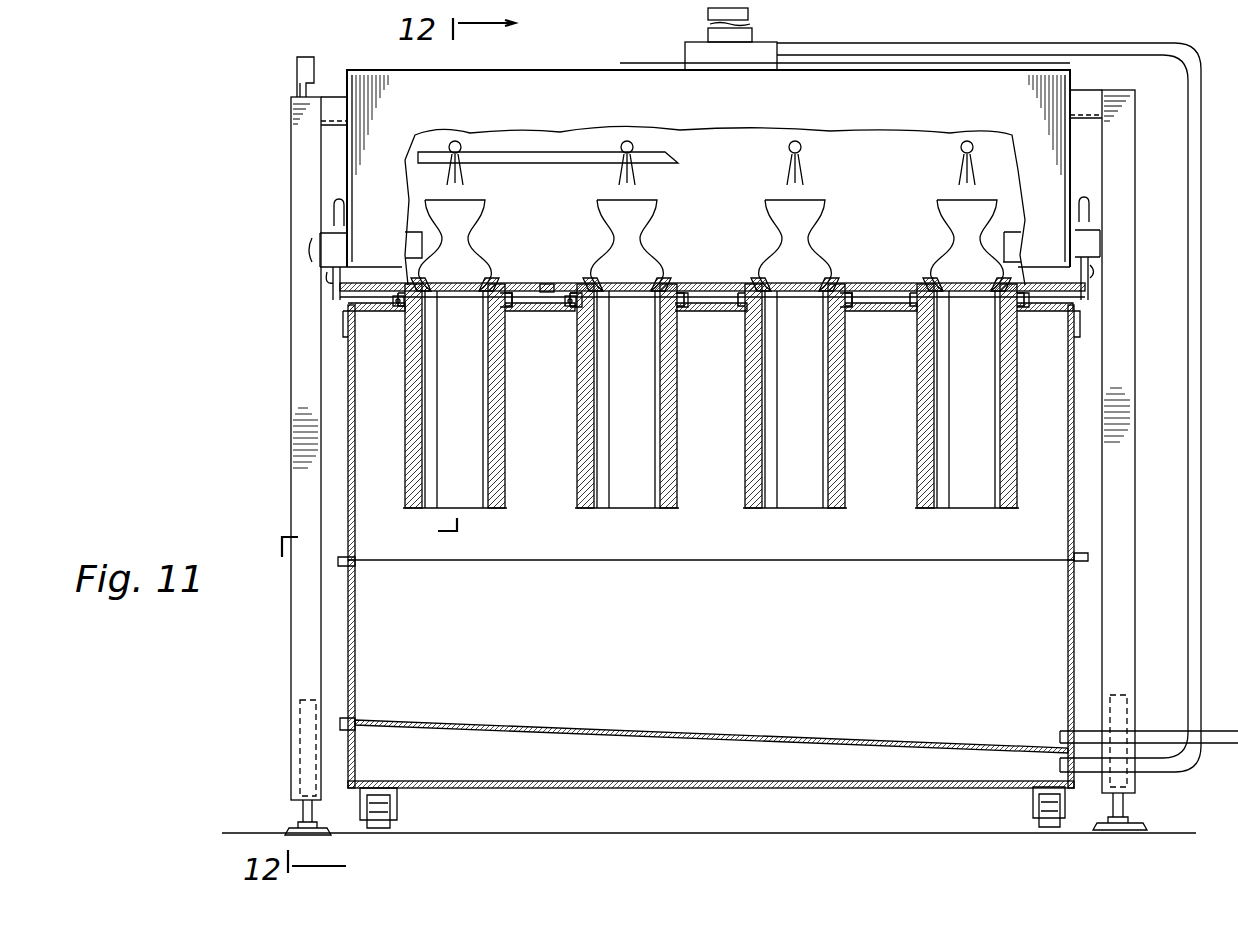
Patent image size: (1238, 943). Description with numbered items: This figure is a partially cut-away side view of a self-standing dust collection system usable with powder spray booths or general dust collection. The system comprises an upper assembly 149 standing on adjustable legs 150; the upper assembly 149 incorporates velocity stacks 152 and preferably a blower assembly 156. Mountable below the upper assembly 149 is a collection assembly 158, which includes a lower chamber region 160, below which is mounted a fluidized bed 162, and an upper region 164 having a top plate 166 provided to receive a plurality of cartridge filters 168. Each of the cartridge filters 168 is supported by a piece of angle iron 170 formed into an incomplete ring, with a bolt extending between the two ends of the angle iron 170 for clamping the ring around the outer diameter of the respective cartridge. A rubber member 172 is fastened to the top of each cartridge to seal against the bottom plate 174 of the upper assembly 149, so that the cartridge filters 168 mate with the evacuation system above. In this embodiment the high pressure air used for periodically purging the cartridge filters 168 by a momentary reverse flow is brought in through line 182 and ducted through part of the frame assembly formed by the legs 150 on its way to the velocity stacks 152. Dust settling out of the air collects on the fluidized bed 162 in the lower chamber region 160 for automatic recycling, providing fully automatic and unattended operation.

The upper assembly 149 is at (682, 95).
The adjustable legs 150 is at (297, 381).
The velocity stacks 152 is at (465, 222).
The blower assembly 156 is at (765, 50).
The collection assembly 158 is at (1068, 503).
The lower chamber region 160 is at (1037, 618).
The fluidized bed 162 is at (792, 740).
The upper region 164 is at (1058, 378).
The top plate 166 is at (705, 309).
The cartridge filters 168 is at (503, 445).
The angle iron 170 is at (681, 298).
The rubber member 172 is at (507, 287).
The bottom plate 174 is at (552, 282).
The line 182 is at (296, 66).